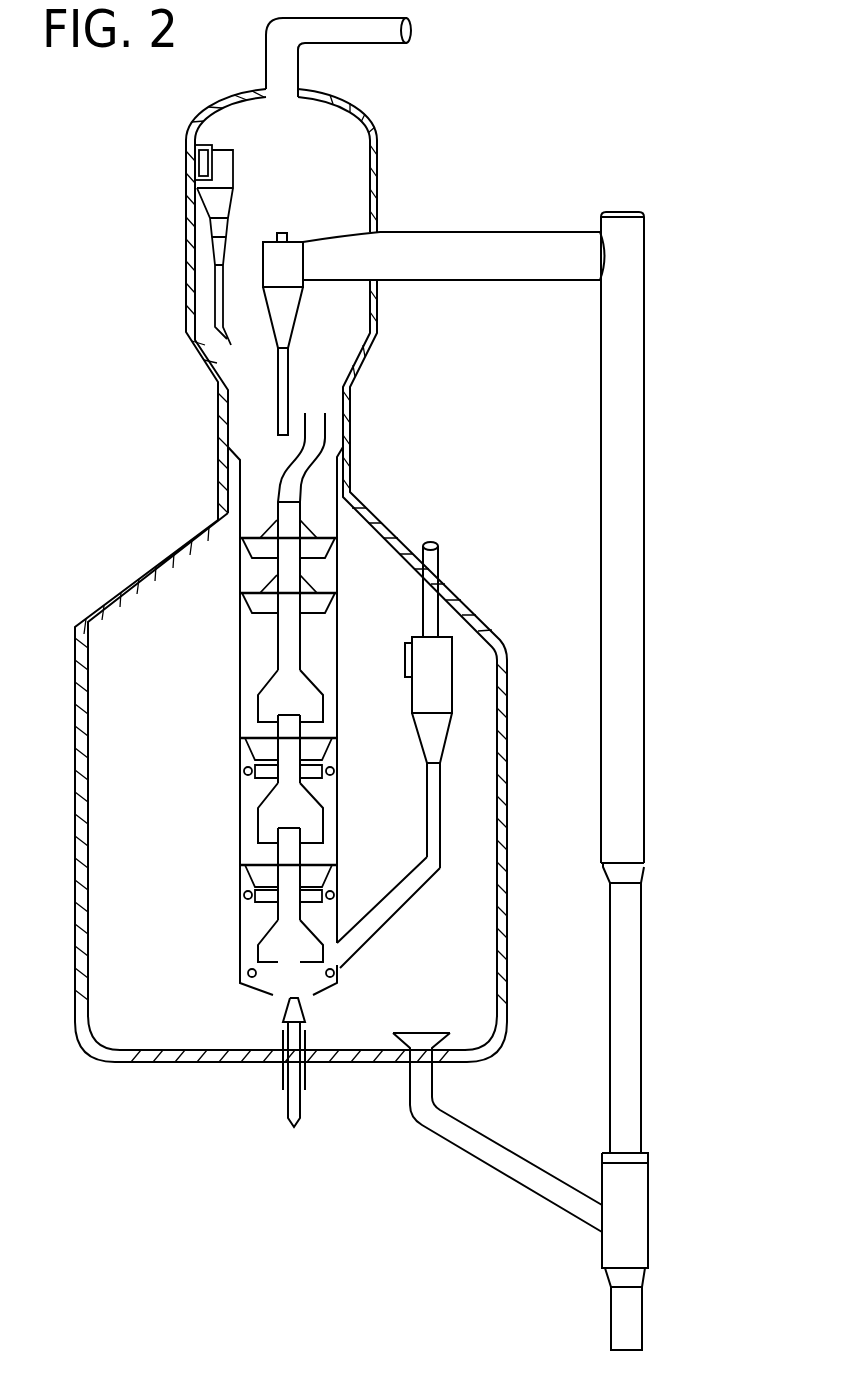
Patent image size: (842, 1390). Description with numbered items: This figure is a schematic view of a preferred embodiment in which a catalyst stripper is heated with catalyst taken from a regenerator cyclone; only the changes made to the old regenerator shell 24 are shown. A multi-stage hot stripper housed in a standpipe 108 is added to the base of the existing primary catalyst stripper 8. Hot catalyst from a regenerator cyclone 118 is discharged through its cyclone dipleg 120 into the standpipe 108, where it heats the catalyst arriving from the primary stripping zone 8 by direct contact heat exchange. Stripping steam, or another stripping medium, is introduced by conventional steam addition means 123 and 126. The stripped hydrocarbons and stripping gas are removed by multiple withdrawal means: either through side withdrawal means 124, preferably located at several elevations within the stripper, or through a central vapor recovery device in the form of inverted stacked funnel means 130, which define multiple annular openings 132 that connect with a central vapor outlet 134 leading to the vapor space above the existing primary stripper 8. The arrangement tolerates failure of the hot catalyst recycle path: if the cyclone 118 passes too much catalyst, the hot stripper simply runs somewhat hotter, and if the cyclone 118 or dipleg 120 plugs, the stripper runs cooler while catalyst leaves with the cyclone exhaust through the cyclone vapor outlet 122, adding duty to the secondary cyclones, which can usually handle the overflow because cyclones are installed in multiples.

The primary catalyst stripper 8 is at (337, 555).
The regenerator shell 24 is at (500, 640).
The standpipe 108 is at (240, 668).
The regenerator cyclone 118 is at (445, 708).
The cyclone dipleg 120 is at (395, 910).
The cyclone vapor outlet 122 is at (438, 566).
The steam addition means 123 is at (335, 985).
The side withdrawal means 124 is at (248, 900).
The steam addition means 126 is at (333, 776).
The inverted stacked funnel means 130 is at (278, 783).
The annular openings 132 is at (262, 722).
The central vapor outlet 134 is at (325, 430).